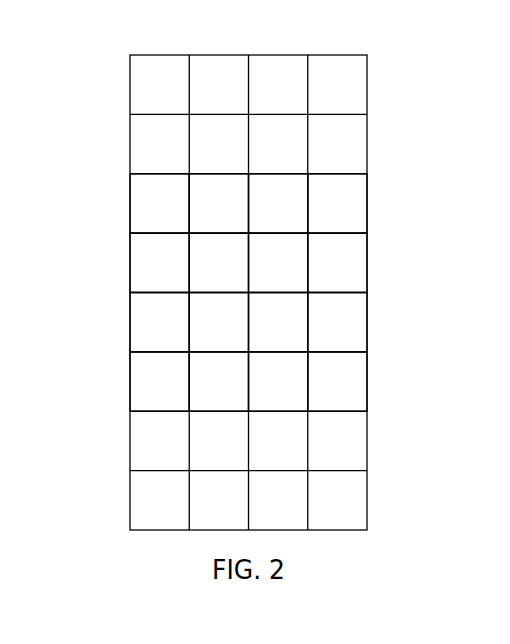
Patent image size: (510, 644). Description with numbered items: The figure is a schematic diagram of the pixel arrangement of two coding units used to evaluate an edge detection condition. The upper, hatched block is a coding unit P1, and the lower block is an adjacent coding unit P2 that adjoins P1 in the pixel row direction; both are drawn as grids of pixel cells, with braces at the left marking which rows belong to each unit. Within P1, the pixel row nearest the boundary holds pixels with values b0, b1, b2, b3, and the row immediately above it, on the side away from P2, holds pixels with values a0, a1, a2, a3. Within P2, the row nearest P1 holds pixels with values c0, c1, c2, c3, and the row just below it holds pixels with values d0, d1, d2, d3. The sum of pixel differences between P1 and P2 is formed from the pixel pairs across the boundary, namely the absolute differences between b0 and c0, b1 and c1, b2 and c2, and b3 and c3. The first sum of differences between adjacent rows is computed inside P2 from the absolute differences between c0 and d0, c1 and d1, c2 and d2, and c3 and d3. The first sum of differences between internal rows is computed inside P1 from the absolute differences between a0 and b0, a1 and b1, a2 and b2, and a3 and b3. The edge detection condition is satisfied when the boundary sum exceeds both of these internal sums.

The coding unit P1 is at (130, 55).
The adjacent coding unit P2 is at (130, 292).
The pixel value a0 is at (159, 203).
The pixel value a1 is at (218, 203).
The pixel value a2 is at (278, 203).
The pixel value a3 is at (337, 203).
The pixel value b0 is at (159, 262).
The pixel value b1 is at (218, 262).
The pixel value b2 is at (278, 262).
The pixel value b3 is at (337, 262).
The pixel value c0 is at (159, 322).
The pixel value c1 is at (218, 322).
The pixel value c2 is at (278, 322).
The pixel value c3 is at (337, 322).
The pixel value d0 is at (159, 381).
The pixel value d1 is at (218, 381).
The pixel value d2 is at (278, 381).
The pixel value d3 is at (337, 381).